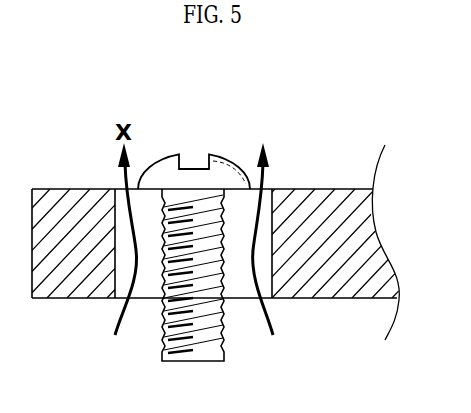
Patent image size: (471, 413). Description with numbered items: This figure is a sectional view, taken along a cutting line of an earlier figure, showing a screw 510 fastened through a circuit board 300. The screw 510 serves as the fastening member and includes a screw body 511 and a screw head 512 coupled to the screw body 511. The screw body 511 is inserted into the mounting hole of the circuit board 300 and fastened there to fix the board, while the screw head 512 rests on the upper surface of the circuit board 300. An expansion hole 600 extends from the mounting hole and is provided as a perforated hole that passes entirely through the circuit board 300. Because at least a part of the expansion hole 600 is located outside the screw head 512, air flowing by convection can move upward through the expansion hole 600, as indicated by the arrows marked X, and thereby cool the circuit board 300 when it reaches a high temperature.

The circuit board 300 is at (65, 283).
The screw 510 is at (183, 112).
The screw body 511 is at (163, 340).
The screw head 512 is at (232, 162).
The expansion hole 600 is at (232, 288).